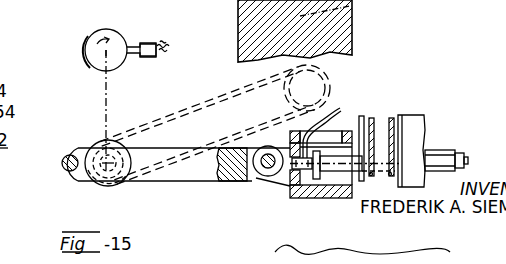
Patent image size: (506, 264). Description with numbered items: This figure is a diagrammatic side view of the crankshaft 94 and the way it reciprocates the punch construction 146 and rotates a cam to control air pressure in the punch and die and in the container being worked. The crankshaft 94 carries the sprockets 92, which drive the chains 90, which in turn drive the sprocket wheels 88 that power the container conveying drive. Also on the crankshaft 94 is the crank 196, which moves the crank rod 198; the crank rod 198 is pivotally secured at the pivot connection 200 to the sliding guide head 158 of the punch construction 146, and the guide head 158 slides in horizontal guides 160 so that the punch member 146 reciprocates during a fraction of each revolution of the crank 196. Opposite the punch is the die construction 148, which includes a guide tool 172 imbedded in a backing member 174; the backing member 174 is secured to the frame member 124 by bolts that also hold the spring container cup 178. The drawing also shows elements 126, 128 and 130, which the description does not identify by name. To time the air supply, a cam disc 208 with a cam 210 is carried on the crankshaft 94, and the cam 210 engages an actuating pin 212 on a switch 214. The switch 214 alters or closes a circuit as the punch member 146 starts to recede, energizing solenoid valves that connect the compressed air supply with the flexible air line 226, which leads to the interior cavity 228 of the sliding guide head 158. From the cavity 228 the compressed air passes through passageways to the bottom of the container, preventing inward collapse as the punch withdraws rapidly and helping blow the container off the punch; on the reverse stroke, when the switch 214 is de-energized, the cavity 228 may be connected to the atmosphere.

The guide tool 172 is at (246, 8).
The cam disc 208 is at (118, 40).
The cam 210 is at (91, 60).
The actuating pin 212 is at (129, 55).
The switch 214 is at (151, 44).
The chains 90 is at (190, 102).
The sprocket wheels 88 is at (292, 96).
The crankshaft 94 is at (106, 90).
The sprockets 92 is at (107, 134).
The crank 196 is at (64, 172).
The crank rod 198 is at (172, 182).
The pivot connection 200 is at (262, 170).
The guide head 158 is at (287, 182).
The interior cavity 228 is at (305, 170).
The horizontal guides 160 is at (347, 130).
The punch construction 146 is at (340, 186).
The flexible air line 226 is at (339, 108).
The plate 126 is at (362, 116).
The spacer plate 130 is at (372, 118).
The spacer plate 128 is at (392, 118).
The frame member 124 is at (418, 140).
The backing member 174 is at (428, 147).
The spring container cup 178 is at (460, 159).
The die construction 148 is at (396, 181).